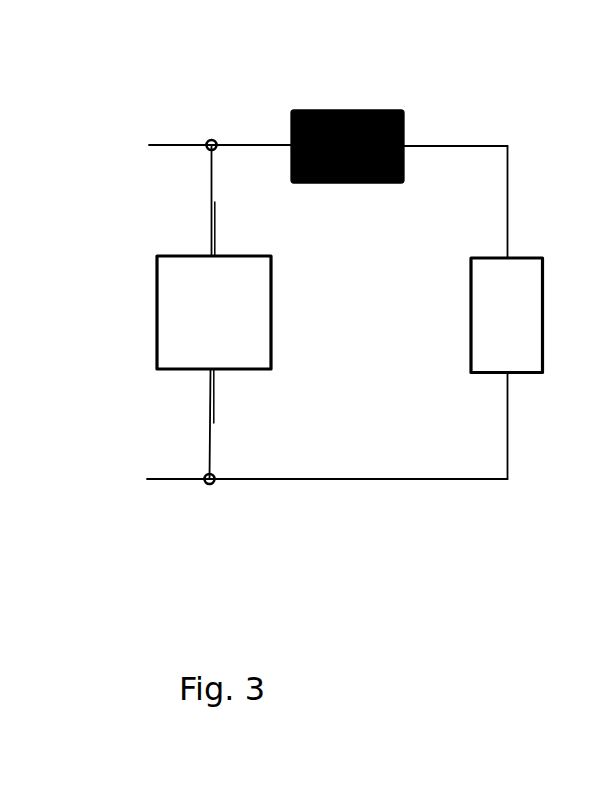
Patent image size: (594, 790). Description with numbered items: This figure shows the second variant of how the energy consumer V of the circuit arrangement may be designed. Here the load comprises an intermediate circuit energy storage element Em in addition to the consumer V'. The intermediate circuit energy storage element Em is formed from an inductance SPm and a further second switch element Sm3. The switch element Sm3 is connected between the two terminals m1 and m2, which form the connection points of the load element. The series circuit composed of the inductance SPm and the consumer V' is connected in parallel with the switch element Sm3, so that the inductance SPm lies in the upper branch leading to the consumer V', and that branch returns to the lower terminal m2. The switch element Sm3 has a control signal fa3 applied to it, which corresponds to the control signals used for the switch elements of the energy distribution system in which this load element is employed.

The terminal m1 is at (213, 137).
The terminal m2 is at (209, 486).
The inductance SPm is at (342, 110).
The energy consumer V is at (456, 139).
The control signal fa3 is at (155, 313).
The second switch element Sm3 is at (214, 312).
The intermediate circuit energy storage element Em is at (348, 208).
The consumer V' is at (507, 315).